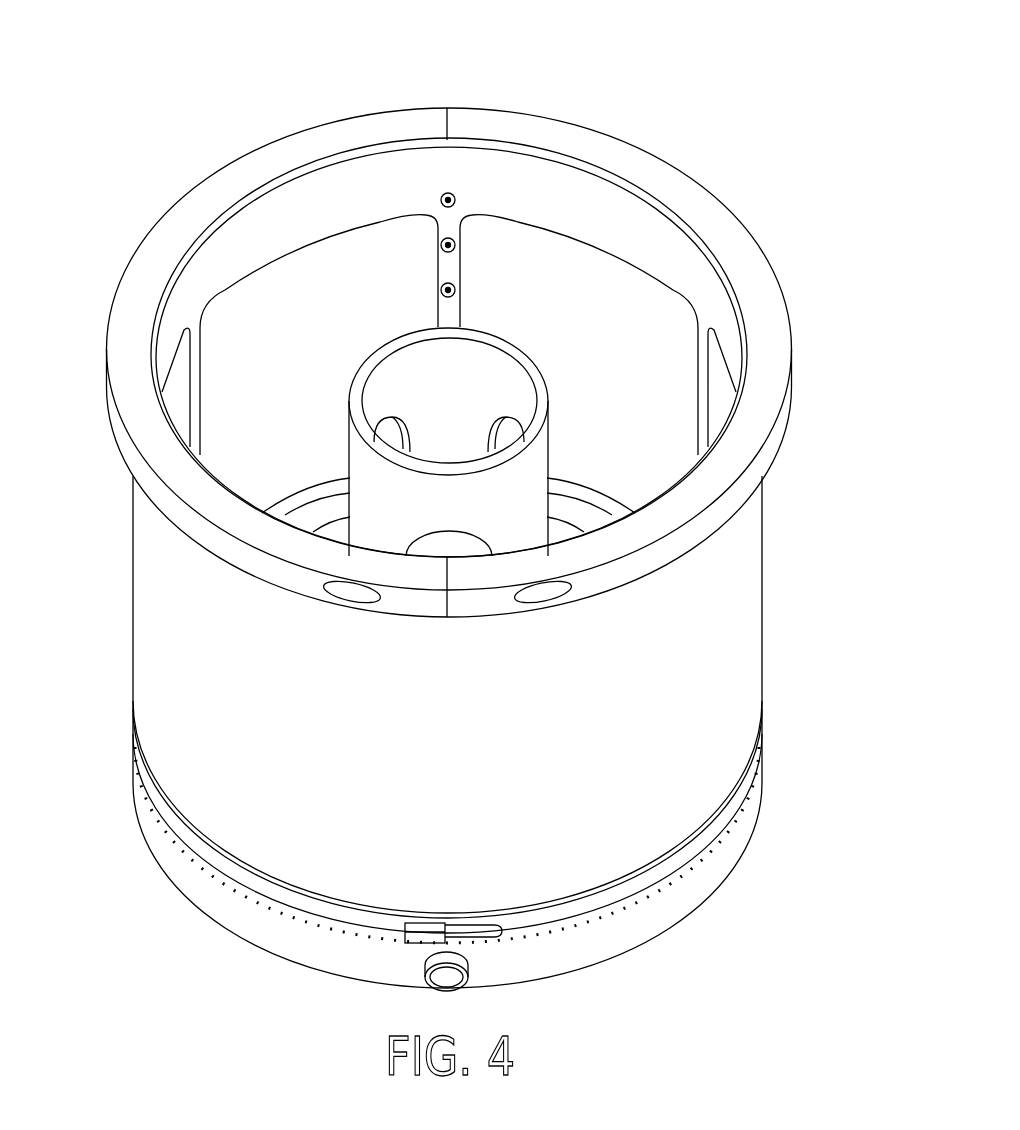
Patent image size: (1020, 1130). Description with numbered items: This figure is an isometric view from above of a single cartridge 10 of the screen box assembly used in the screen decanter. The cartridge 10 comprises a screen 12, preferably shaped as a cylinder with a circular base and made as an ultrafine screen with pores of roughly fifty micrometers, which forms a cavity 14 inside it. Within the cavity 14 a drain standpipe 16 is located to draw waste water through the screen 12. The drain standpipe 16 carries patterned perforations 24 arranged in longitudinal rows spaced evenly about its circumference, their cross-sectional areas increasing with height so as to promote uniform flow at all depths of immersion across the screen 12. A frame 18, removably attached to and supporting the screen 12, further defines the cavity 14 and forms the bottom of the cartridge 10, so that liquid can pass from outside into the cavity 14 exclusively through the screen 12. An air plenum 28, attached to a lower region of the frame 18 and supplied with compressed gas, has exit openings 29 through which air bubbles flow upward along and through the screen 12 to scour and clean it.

The cartridge 10 is at (478, 522).
The screen 12 is at (204, 720).
The cavity 14 is at (336, 268).
The drain standpipe 16 is at (592, 300).
The frame 18 is at (758, 297).
The patterned perforations 24 is at (396, 412).
The air plenum 28 is at (600, 917).
The exit openings 29 is at (531, 945).